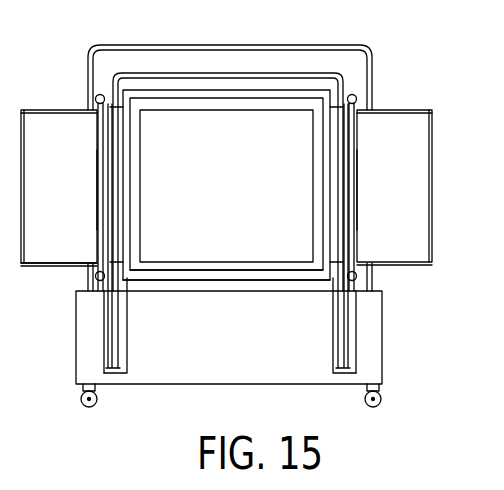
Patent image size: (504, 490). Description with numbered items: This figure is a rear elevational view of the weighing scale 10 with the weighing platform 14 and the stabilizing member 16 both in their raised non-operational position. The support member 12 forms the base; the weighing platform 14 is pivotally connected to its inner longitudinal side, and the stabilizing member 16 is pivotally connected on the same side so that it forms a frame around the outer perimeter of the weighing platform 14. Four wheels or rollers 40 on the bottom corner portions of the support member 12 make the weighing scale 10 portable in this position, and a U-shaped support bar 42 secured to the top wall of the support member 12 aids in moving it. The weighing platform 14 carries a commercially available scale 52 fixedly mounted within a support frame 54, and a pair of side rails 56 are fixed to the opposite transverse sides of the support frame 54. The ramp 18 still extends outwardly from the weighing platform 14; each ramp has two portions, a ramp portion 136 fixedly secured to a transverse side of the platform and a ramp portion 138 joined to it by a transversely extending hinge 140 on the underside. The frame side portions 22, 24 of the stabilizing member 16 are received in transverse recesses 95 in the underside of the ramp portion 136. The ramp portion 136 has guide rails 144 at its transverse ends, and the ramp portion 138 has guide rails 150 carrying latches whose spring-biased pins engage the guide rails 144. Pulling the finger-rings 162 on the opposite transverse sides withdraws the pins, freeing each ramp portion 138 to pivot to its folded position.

The weighing scale 10 is at (392, 67).
The support member 12 is at (371, 353).
The weighing platform 14 is at (242, 222).
The stabilizing member 16 is at (265, 76).
The ramp 18 is at (65, 245).
The frame side portion 22 is at (110, 360).
The frame side portion 24 is at (356, 320).
The wheels or rollers 40 is at (99, 398).
The U-shaped support bar 42 is at (200, 45).
The scale 52 is at (265, 252).
The support frame 54 is at (156, 273).
The side rail 56 is at (124, 338).
The transverse recess 95 is at (340, 150).
The ramp portion 136 is at (338, 132).
The ramp portion 138 is at (38, 128).
The hinge 140 is at (99, 182).
The guide rail 144 is at (341, 93).
The guide rail 150 is at (71, 110).
The finger-ring 162 is at (101, 94).